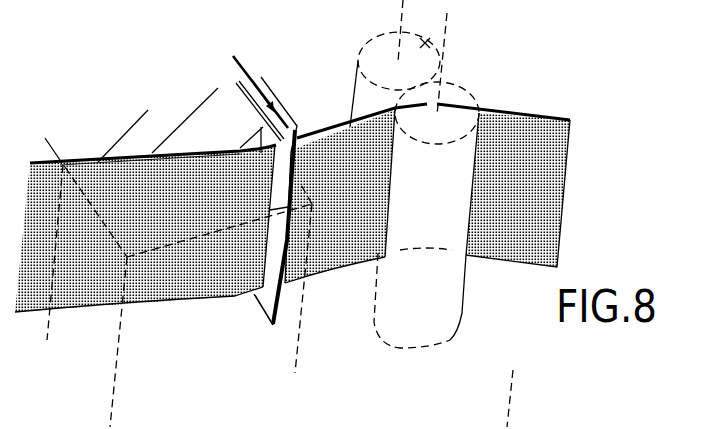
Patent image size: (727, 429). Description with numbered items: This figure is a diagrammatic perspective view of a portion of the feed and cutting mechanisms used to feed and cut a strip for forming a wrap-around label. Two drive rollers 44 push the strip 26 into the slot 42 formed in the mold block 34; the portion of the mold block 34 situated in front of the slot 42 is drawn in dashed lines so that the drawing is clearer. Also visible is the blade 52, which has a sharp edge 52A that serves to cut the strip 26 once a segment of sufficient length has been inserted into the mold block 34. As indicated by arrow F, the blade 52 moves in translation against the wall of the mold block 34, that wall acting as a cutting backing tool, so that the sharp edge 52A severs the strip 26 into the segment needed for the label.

The strip 26 is at (552, 168).
The mold block 34 is at (160, 122).
The slot 42 is at (58, 163).
The drive rollers 44 is at (457, 97).
The blade 52 is at (280, 101).
The sharp edge 52A is at (263, 295).
The arrow f F is at (229, 44).